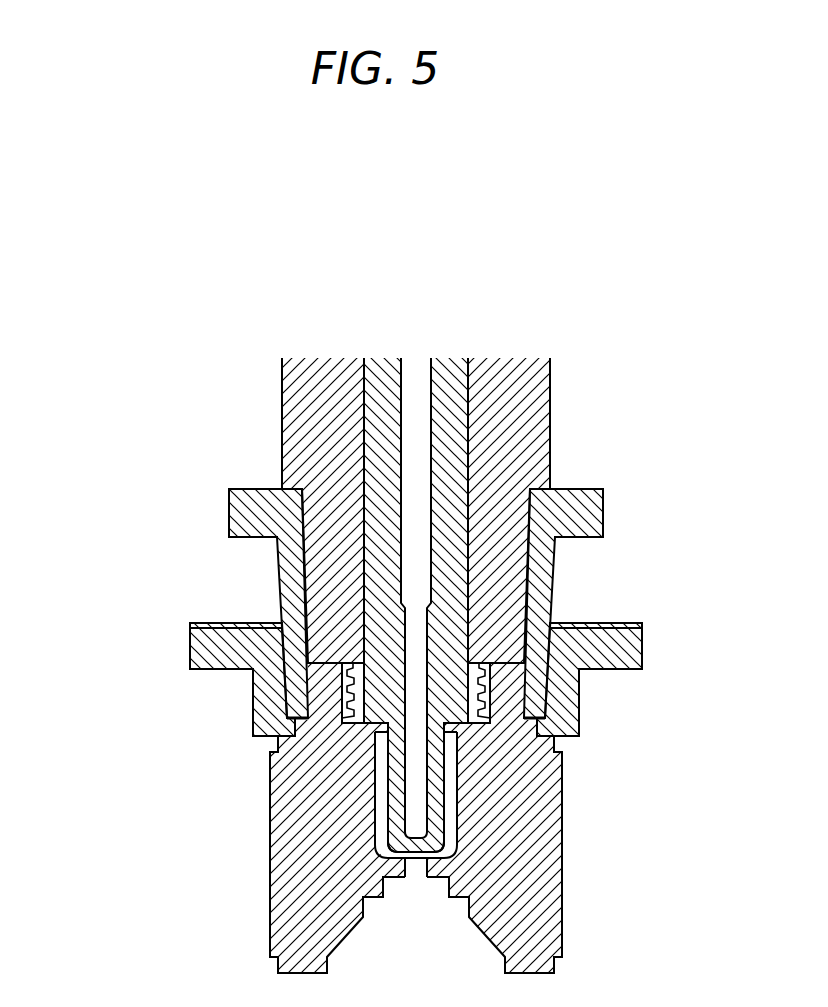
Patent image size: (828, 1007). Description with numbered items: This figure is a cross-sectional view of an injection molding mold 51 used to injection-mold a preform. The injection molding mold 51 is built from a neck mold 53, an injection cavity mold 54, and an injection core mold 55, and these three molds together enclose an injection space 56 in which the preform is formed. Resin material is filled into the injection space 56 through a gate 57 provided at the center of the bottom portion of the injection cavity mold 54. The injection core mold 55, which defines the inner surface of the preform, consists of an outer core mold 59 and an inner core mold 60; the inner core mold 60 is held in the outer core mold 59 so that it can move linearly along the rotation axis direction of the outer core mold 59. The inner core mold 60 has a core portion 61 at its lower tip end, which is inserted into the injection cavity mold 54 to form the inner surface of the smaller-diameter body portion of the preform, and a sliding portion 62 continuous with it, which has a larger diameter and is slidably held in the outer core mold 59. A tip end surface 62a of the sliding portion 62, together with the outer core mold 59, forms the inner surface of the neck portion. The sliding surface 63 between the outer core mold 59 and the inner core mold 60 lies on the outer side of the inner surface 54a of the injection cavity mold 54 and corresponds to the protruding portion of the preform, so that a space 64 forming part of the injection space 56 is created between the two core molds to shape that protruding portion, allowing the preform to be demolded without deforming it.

The injection molding mold 51 is at (660, 447).
The neck mold 53 is at (556, 586).
The injection cavity mold 54 is at (283, 920).
The inner surface of the injection cavity mold 54a is at (452, 808).
The injection core mold 55 is at (74, 633).
The injection space 56 is at (386, 830).
The gate 57 is at (413, 875).
The outer core mold 59 is at (298, 423).
The inner core mold 60 is at (130, 695).
The core portion 61 is at (390, 787).
The sliding portion 62 is at (383, 667).
The tip end surface of the sliding portion 62a is at (500, 788).
The sliding surface 63 is at (371, 343).
The space 64 is at (545, 718).